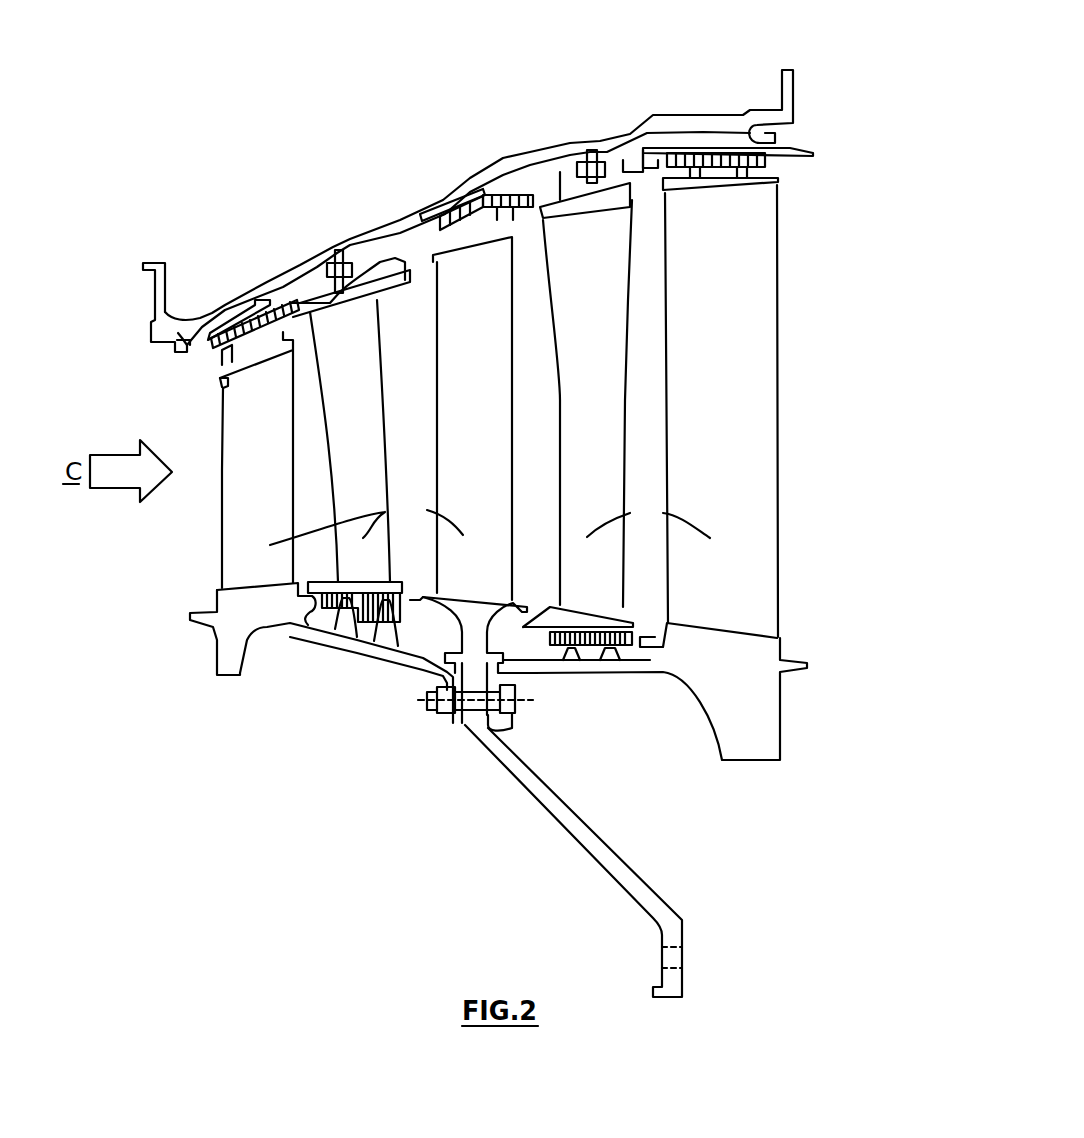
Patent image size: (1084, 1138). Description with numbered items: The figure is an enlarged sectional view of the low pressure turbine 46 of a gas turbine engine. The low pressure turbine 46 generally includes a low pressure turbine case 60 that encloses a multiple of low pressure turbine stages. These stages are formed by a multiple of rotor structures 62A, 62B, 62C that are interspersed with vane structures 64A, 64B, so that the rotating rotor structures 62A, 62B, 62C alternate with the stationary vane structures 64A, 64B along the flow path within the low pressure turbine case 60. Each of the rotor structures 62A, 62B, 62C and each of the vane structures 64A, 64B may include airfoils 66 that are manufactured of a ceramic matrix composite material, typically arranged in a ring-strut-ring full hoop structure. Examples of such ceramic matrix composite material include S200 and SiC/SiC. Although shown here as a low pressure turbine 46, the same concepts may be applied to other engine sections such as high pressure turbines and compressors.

The low pressure turbine 46 is at (842, 104).
The low pressure turbine case 60 is at (485, 168).
The rotor structure 62A is at (280, 488).
The rotor structure 62B is at (501, 441).
The rotor structure 62C is at (744, 412).
The vane structure 64A is at (372, 404).
The vane structure 64B is at (613, 321).
The airfoils 66 is at (490, 521).